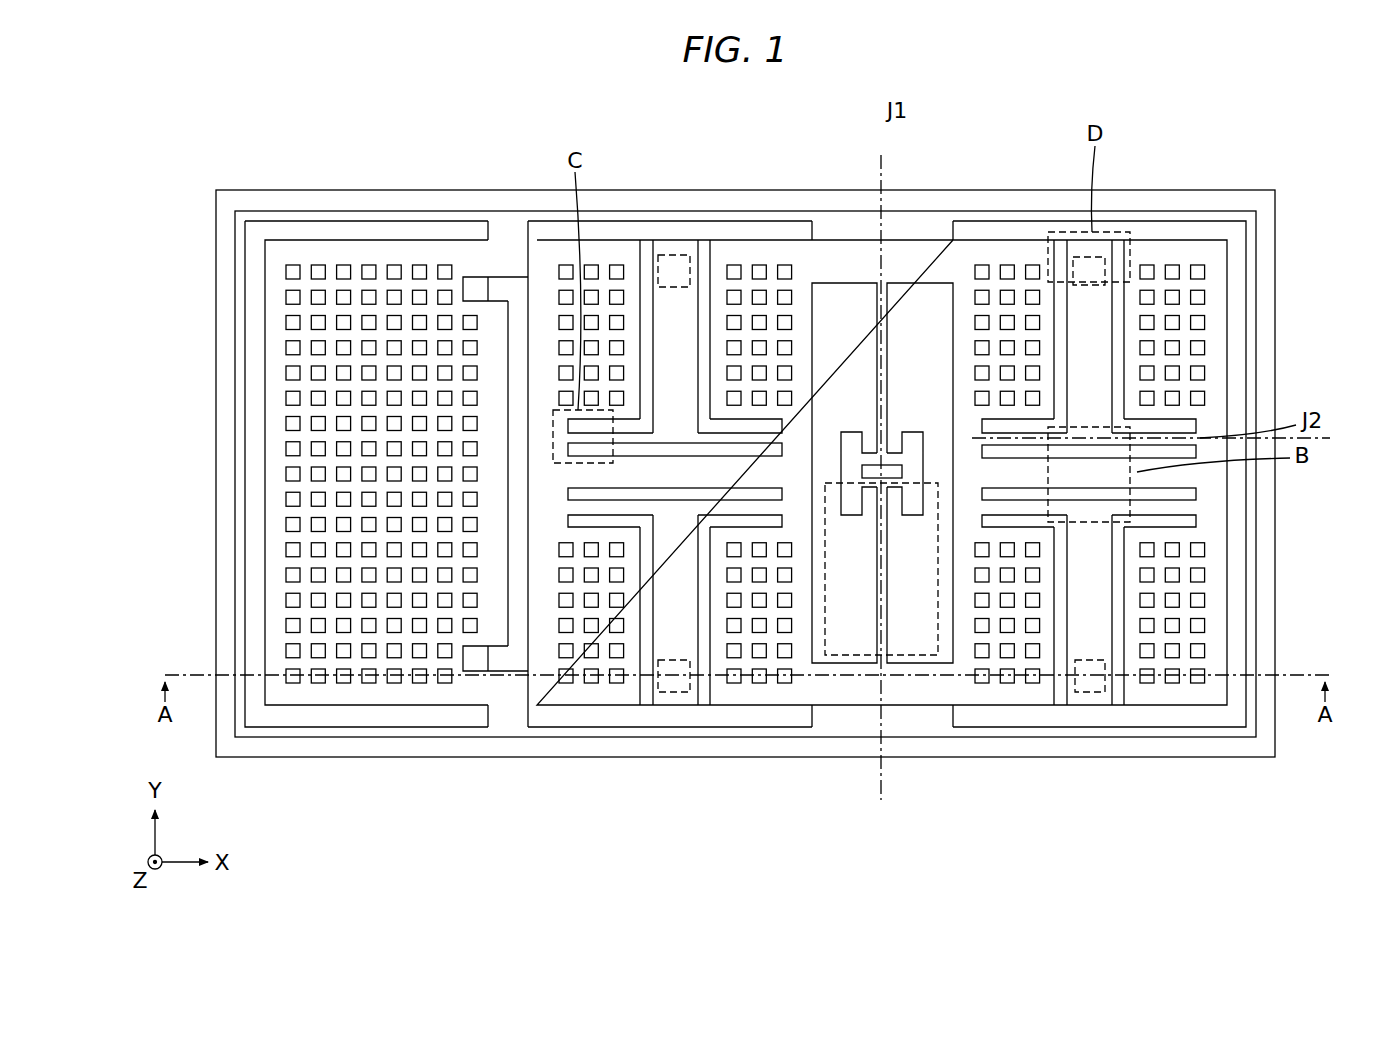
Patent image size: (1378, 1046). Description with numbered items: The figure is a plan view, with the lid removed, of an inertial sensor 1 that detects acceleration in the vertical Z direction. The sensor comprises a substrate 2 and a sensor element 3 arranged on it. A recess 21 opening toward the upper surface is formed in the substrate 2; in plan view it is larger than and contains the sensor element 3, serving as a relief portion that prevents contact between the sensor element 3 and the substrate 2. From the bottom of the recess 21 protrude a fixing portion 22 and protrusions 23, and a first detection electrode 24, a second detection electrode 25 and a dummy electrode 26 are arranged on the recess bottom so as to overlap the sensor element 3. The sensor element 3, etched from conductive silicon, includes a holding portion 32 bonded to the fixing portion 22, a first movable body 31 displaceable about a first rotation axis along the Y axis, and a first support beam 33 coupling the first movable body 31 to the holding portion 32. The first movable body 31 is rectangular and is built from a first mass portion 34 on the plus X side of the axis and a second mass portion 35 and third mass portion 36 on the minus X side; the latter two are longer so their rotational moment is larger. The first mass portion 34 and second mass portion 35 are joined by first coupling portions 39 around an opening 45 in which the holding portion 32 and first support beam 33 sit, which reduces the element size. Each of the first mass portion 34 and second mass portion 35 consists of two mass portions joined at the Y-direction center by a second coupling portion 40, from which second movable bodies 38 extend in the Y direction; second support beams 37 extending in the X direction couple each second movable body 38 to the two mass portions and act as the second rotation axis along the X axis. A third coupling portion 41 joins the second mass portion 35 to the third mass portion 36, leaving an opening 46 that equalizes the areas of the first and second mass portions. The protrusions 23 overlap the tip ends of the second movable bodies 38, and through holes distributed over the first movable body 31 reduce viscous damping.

The inertial sensor 1 is at (1210, 132).
The substrate 2 is at (980, 768).
The sensor element 3 is at (833, 230).
The recess 21 is at (843, 717).
The fixing portion 22 is at (848, 447).
The protrusions 23 is at (675, 270).
The first detection electrode 24 is at (1188, 717).
The second detection electrode 25 is at (622, 717).
The dummy electrode 26 is at (338, 717).
The first movable body 31 is at (780, 682).
The holding portion 32 is at (856, 517).
The first support beam 33 is at (888, 372).
The first mass portion 34 is at (1010, 245).
The second mass portion 35 is at (765, 245).
The third mass portion 36 is at (355, 250).
The second support beam 37 is at (578, 437).
The second movable body 38 is at (655, 315).
The first coupling portions 39 is at (920, 245).
The second coupling portion 40 is at (578, 471).
The third coupling portion 41 is at (505, 245).
The opening 45 is at (940, 290).
The opening 46 is at (527, 295).